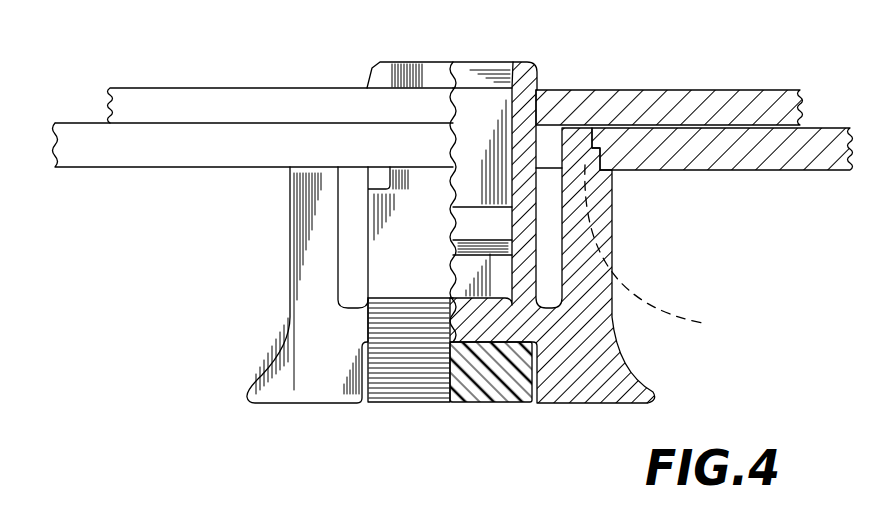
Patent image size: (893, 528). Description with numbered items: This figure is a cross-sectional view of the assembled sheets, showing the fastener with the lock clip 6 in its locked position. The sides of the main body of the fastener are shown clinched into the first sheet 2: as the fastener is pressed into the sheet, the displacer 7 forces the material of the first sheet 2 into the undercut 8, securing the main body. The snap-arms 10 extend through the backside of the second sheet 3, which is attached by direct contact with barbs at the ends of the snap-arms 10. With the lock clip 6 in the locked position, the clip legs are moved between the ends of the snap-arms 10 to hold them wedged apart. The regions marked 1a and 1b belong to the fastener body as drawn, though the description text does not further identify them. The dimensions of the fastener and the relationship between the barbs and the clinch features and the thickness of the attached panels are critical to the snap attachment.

The base body of fastener 1a is at (590, 313).
The protruding portion of base 1b is at (663, 252).
The first sheet 2 is at (158, 168).
The second sheet 3 is at (197, 88).
The lock clip 6 is at (205, 198).
The displacer 7 is at (632, 172).
The undercut 8 is at (592, 150).
The snap-arms 10 is at (522, 62).